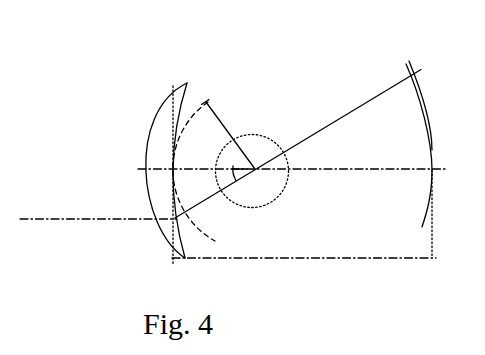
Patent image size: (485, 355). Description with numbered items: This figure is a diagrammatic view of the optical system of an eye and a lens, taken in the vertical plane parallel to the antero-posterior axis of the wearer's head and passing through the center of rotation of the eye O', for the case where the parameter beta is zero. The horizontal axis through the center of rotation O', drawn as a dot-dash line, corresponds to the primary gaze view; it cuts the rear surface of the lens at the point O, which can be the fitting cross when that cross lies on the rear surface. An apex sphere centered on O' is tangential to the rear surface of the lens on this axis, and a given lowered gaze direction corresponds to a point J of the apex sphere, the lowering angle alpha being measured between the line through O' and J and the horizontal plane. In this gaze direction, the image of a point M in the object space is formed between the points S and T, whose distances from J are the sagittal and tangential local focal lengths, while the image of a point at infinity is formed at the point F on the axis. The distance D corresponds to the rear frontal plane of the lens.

The point in the object space M is at (98, 230).
The point of intersection of the rear surface of the lens and the axis O is at (166, 170).
The center of rotation of the eye O' is at (252, 171).
The distance corresponding to the rear frontal plane of the lens D is at (214, 171).
The point of the apex sphere J is at (293, 150).
The point corresponding to minimum distance JS S is at (419, 141).
The point corresponding to maximum distance JT T is at (401, 73).
The point where the image of a point at infinity is formed F is at (422, 204).